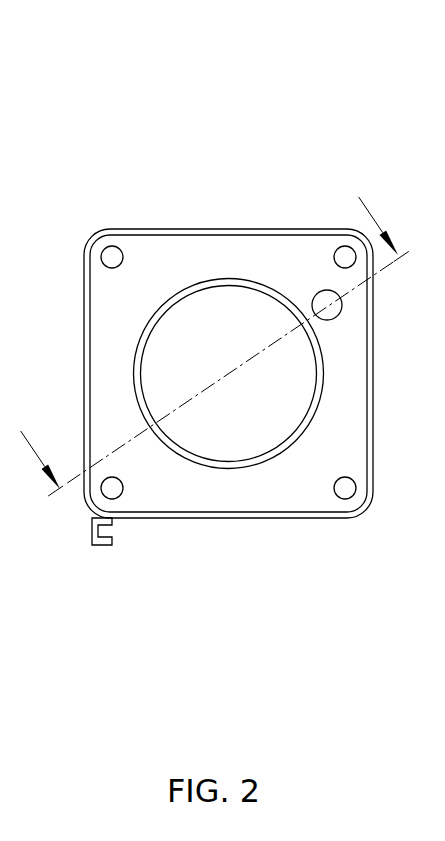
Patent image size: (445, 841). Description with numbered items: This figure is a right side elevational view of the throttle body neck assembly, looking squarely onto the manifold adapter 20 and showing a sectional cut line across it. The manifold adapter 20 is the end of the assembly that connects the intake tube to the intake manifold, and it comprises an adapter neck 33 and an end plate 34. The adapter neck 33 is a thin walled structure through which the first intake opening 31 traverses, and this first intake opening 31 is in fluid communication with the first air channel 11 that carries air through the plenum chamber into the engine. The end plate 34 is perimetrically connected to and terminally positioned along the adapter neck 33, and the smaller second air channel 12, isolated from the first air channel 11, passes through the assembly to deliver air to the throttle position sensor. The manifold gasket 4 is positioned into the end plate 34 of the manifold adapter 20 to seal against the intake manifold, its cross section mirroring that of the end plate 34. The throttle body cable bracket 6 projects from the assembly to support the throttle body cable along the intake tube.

The manifold adapter 20 is at (326, 52).
The manifold gasket 4 is at (255, 502).
The end plate 34 is at (223, 230).
The first air channel 11 is at (270, 434).
The first intake opening 31 is at (137, 374).
The adapter neck 33 is at (213, 462).
The second air channel 12 is at (344, 315).
The throttle body cable bracket 6 is at (97, 545).